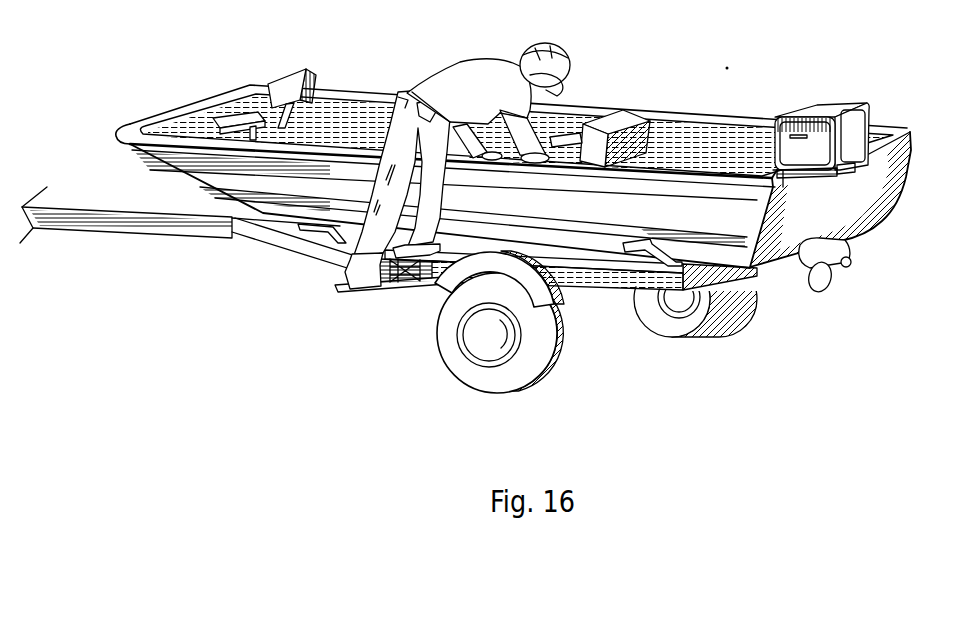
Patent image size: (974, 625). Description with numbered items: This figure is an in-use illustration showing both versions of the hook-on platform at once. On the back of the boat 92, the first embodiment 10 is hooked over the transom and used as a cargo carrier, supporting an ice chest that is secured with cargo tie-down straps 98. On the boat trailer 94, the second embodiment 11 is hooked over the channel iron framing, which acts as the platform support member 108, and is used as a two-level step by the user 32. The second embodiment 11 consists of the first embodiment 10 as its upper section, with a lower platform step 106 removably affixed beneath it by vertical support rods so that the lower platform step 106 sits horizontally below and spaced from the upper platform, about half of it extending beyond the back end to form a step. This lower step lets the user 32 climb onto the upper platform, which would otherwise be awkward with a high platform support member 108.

The first embodiment 10 is at (846, 176).
The second embodiment 11 is at (385, 298).
The user 32 is at (457, 80).
The boat 92 is at (890, 188).
The boat trailer 94 is at (253, 234).
The cargo tie-down straps 98 is at (818, 101).
The lower platform step 106 is at (335, 290).
The platform support member 108 is at (276, 244).